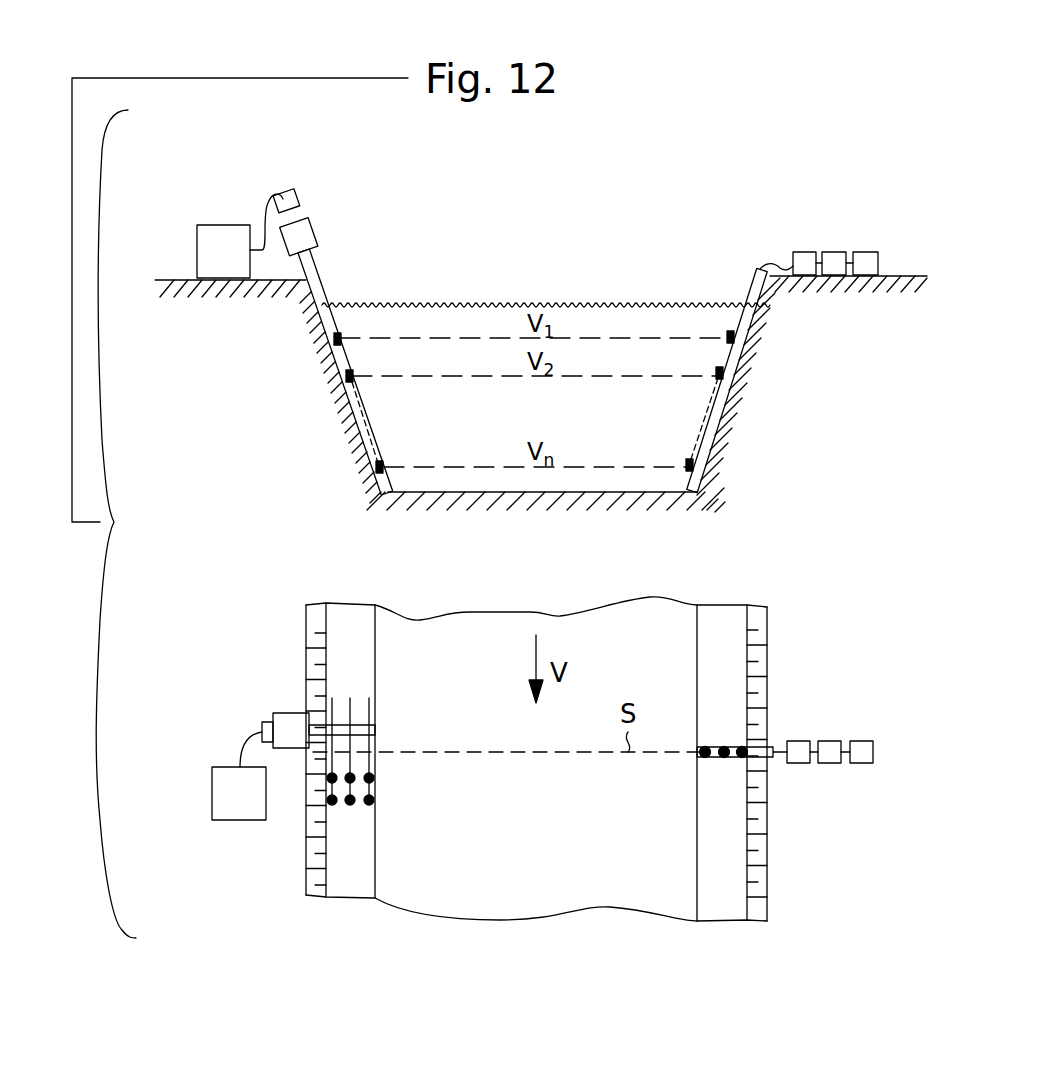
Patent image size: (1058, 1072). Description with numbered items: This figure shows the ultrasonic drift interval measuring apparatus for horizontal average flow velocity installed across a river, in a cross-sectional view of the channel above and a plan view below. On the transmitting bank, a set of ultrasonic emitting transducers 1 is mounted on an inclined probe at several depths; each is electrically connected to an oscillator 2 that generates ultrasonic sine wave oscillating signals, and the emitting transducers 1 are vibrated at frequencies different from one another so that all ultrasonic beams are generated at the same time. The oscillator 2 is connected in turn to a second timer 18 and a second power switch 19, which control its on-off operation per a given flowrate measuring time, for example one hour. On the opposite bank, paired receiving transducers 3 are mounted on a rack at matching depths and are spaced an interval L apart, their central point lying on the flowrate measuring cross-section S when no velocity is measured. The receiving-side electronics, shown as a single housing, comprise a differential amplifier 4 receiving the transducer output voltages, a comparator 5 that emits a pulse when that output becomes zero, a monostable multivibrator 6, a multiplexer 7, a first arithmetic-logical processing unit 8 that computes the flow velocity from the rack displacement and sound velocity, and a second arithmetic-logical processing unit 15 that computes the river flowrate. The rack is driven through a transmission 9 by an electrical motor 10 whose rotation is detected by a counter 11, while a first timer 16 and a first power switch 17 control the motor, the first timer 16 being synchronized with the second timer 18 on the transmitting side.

The ultrasonic emitting transducer 1 is at (740, 337).
The oscillator 2 is at (803, 252).
The receiving transducer 3 is at (408, 842).
The differential amplifier 4 is at (201, 511).
The comparator 5 is at (201, 511).
The monostable multivibrator 6 is at (201, 511).
The multiplexer 7 is at (201, 511).
The first arithmetic-logical processing unit 8 is at (201, 511).
The transmission 9 is at (322, 483).
The electrical motor 10 is at (318, 242).
The counter 11 is at (300, 206).
The second arithmetic-logical processing unit 15 is at (201, 511).
The first timer 16 is at (201, 511).
The first power switch 17 is at (212, 860).
The second timer 18 is at (868, 252).
The second power switch 19 is at (836, 252).